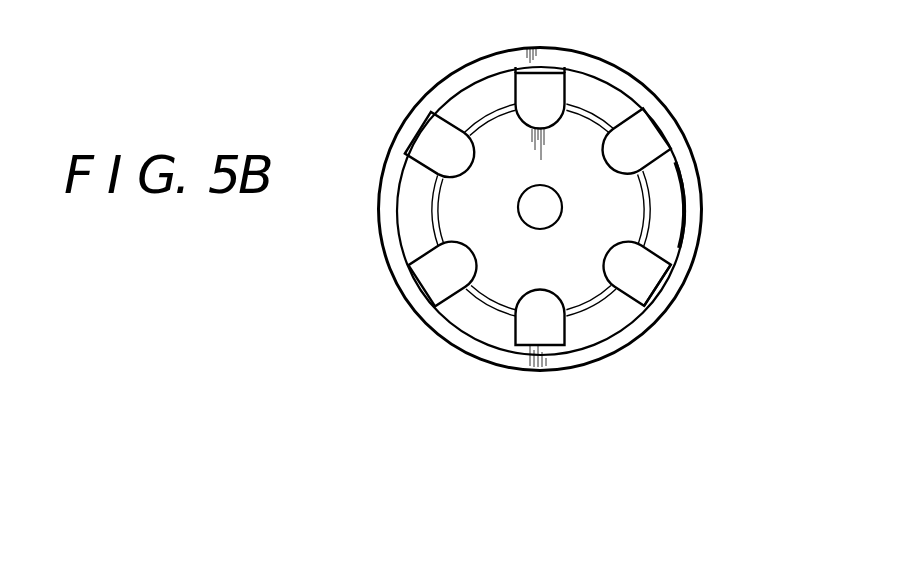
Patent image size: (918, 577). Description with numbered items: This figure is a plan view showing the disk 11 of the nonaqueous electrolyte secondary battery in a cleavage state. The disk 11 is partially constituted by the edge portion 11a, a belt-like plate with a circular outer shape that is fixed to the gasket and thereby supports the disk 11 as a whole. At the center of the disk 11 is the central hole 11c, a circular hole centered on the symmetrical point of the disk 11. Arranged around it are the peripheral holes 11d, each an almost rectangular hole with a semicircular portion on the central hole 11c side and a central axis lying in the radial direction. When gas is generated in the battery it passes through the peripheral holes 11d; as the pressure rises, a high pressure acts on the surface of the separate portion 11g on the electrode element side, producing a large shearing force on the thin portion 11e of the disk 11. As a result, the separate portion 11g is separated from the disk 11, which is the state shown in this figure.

The disk 11 is at (680, 83).
The edge portion 11a is at (668, 127).
The central hole 11c is at (628, 311).
The peripheral hole 11d is at (647, 265).
The thin portion 11e is at (545, 217).
The separate portion 11g is at (495, 283).